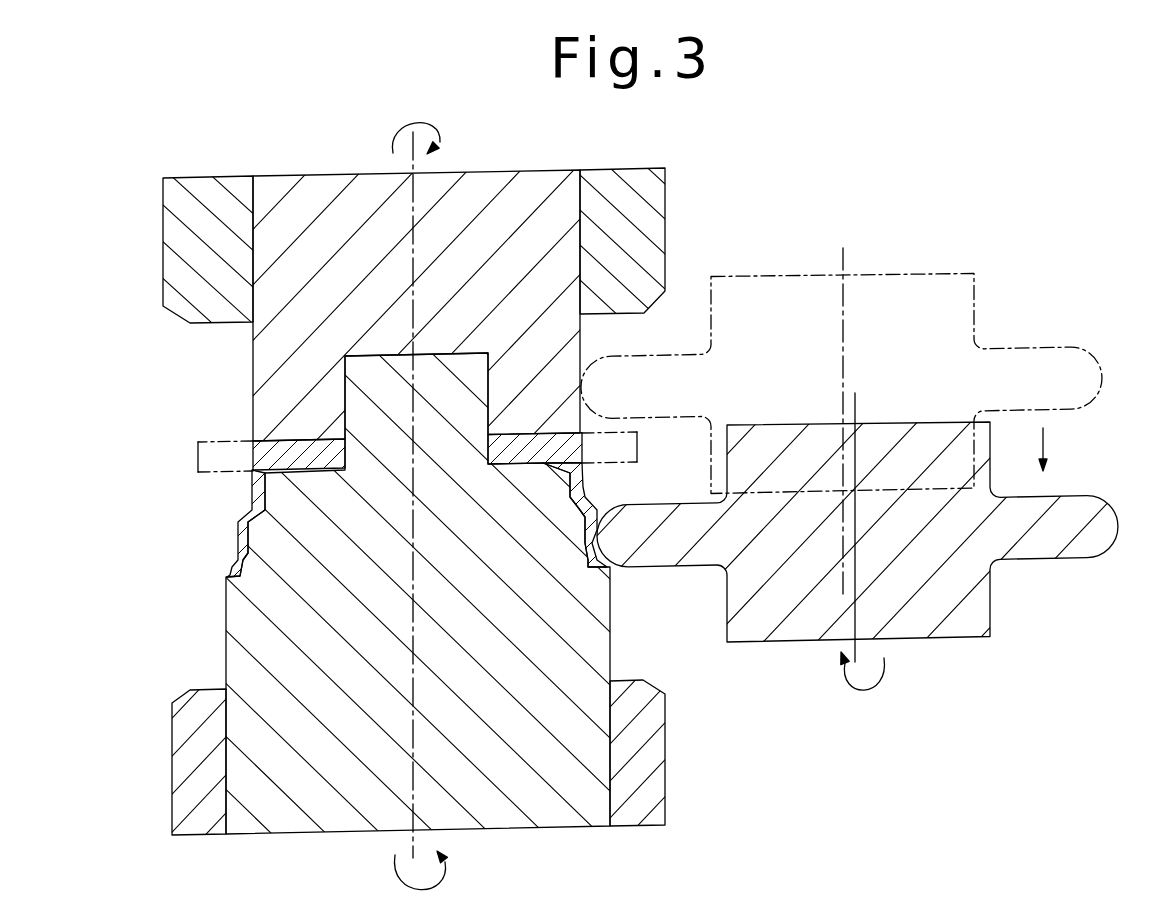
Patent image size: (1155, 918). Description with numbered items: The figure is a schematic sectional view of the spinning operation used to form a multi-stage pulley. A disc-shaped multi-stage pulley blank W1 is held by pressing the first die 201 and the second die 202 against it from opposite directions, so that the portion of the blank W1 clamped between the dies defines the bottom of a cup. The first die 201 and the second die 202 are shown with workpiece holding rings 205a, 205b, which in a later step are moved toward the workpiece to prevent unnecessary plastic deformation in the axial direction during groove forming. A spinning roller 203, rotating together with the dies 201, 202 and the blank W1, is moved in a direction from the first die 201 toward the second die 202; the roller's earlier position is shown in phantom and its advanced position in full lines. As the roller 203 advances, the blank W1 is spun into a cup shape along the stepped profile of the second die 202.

The first die 201 is at (293, 225).
The second die 202 is at (323, 752).
The spinning roller 203 is at (960, 622).
The workpiece holding ring 205a is at (655, 233).
The workpiece holding ring 205b is at (653, 760).
The multi-stage pulley blank W1 is at (248, 498).